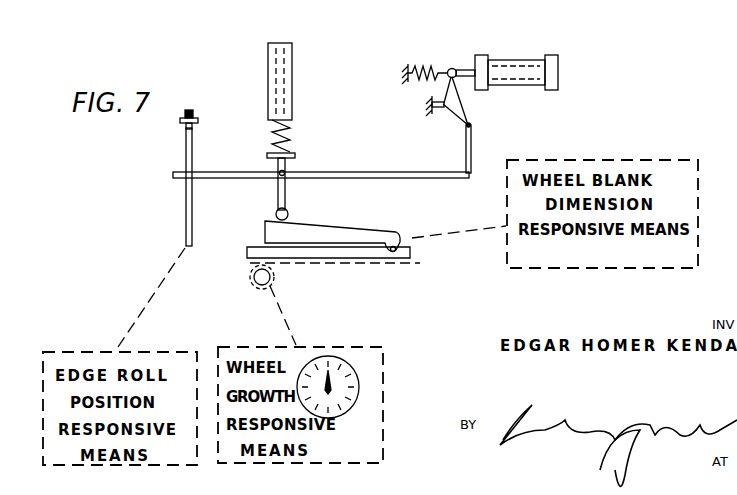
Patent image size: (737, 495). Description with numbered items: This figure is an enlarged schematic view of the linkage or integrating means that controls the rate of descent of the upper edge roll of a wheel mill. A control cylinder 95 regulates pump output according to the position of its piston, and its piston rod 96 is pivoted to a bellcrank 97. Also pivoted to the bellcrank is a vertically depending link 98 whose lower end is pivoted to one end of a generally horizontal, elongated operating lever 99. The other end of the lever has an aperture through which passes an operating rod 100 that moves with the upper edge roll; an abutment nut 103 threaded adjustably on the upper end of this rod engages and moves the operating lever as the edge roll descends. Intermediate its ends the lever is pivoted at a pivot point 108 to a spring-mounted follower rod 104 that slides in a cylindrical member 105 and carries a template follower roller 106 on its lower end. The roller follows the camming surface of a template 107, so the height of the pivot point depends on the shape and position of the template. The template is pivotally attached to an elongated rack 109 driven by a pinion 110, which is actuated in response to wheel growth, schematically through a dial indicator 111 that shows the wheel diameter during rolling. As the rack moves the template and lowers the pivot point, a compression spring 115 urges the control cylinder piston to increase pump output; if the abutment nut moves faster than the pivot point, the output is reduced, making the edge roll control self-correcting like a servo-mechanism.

The control cylinder 95 is at (512, 72).
The piston rod 96 is at (456, 66).
The bellcrank 97 is at (437, 96).
The vertically depending link 98 is at (471, 148).
The operating lever 99 is at (218, 172).
The operating rod 100 is at (186, 200).
The abutment nut 103 is at (193, 120).
The follower rod 104 is at (286, 191).
The cylindrical member 105 is at (279, 64).
The template follower roller 106 is at (276, 213).
The template 107 is at (345, 232).
The pivot point 108 is at (290, 170).
The rack 109 is at (340, 255).
The pinion 110 is at (256, 282).
The dial indicator 111 is at (332, 364).
The compression spring 115 is at (434, 66).